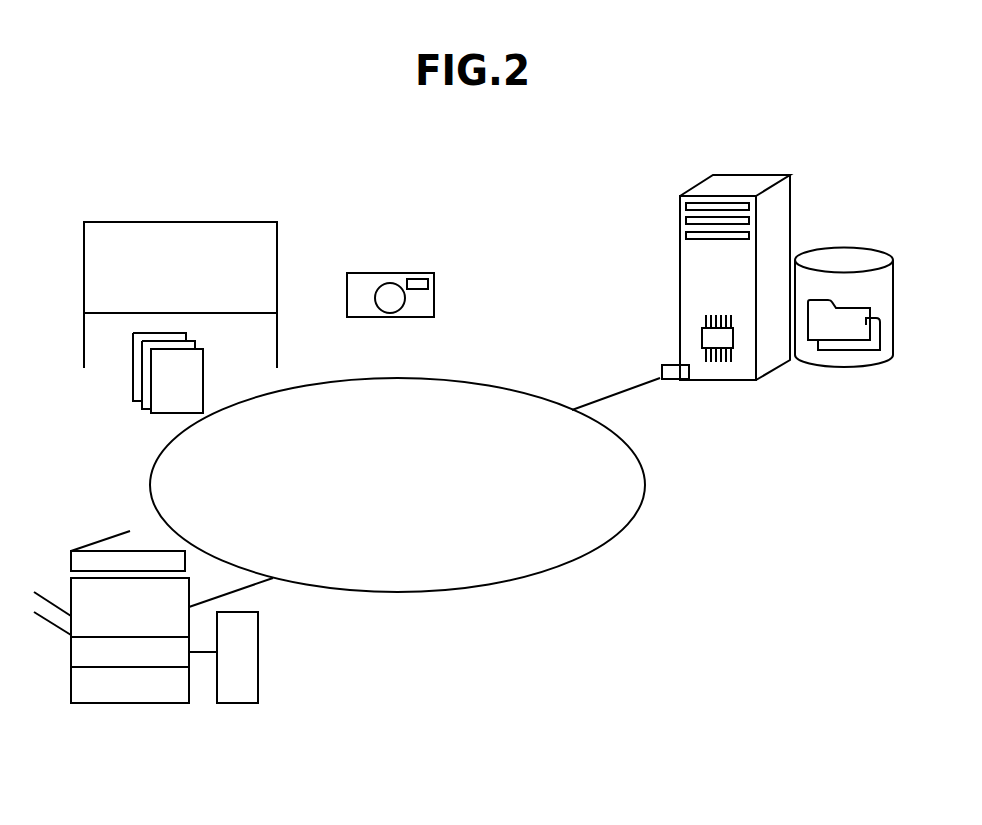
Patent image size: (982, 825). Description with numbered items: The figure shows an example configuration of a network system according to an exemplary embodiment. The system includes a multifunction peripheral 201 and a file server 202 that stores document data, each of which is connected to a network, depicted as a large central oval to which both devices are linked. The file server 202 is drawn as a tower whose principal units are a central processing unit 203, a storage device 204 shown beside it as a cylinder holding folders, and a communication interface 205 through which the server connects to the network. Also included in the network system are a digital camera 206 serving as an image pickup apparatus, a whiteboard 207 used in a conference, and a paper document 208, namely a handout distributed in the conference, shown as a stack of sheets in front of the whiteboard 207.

The multifunction peripheral 201 is at (128, 703).
The file server 202 is at (733, 355).
The central processing unit 203 is at (702, 340).
The storage device 204 is at (847, 253).
The communication interface 205 is at (674, 379).
The digital camera 206 is at (434, 296).
The whiteboard 207 is at (177, 221).
The paper document 208 is at (150, 408).